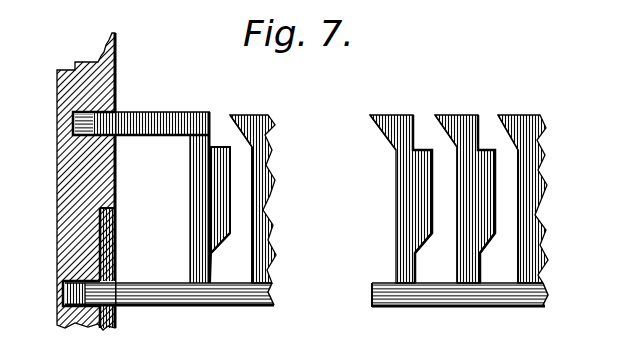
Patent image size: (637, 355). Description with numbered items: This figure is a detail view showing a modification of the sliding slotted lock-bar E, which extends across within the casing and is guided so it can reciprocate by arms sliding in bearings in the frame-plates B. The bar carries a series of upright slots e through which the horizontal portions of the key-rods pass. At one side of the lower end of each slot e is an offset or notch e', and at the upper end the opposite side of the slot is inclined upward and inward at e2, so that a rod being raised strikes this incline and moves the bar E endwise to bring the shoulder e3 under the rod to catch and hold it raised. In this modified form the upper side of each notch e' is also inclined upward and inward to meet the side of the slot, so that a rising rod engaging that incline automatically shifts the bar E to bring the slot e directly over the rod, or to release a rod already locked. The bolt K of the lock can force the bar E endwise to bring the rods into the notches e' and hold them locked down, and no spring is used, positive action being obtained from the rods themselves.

The lock-bar E is at (154, 135).
The frame-plate B is at (122, 201).
The bolt K is at (63, 292).
The slot e is at (374, 215).
The notch e' is at (359, 258).
The incline e2 is at (546, 133).
The shoulder e3 is at (354, 141).